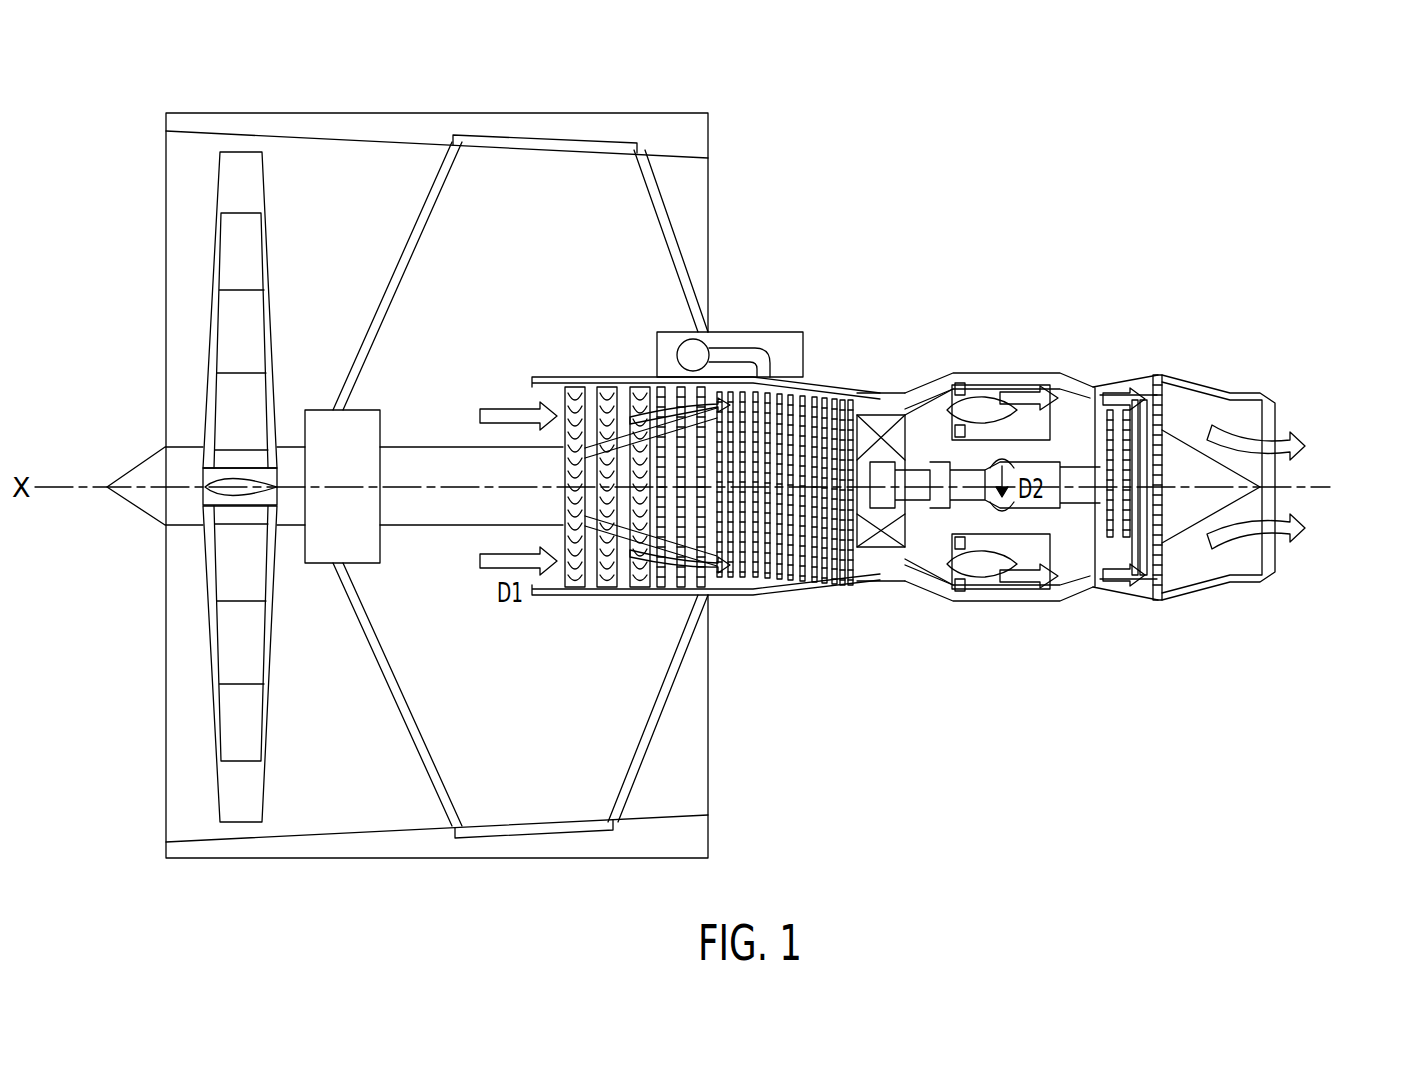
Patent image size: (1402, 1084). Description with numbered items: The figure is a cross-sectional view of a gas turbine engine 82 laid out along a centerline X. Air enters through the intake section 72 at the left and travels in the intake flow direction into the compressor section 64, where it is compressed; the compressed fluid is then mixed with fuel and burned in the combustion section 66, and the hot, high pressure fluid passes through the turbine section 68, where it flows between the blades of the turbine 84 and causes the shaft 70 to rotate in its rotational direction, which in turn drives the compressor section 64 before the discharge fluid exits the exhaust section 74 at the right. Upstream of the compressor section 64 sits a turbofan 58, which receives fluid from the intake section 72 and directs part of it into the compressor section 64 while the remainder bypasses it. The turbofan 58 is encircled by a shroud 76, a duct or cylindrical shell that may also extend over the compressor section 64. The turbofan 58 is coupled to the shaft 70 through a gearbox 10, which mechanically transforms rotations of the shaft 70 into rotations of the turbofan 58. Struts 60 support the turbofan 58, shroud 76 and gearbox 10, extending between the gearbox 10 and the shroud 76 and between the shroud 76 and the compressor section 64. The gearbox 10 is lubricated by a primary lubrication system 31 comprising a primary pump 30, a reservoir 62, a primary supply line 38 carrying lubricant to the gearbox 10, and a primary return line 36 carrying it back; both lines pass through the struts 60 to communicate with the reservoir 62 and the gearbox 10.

The gearbox 10 is at (378, 405).
The primary pump 30 is at (697, 352).
The primary lubrication system 31 is at (756, 284).
The primary return line 36 is at (522, 833).
The primary supply line 38 is at (522, 142).
The turbofan 58 is at (236, 124).
The struts 60 is at (385, 285).
The reservoir 62 is at (787, 338).
The compressor section 64 is at (749, 615).
The combustion section 66 is at (1003, 617).
The turbine section 68 is at (1148, 617).
The shaft 70 is at (428, 447).
The intake section 72 is at (97, 290).
The exhaust section 74 is at (1333, 427).
The shroud 76 is at (328, 113).
The gas turbine engine 82 is at (1025, 188).
The turbine 84 is at (1159, 363).